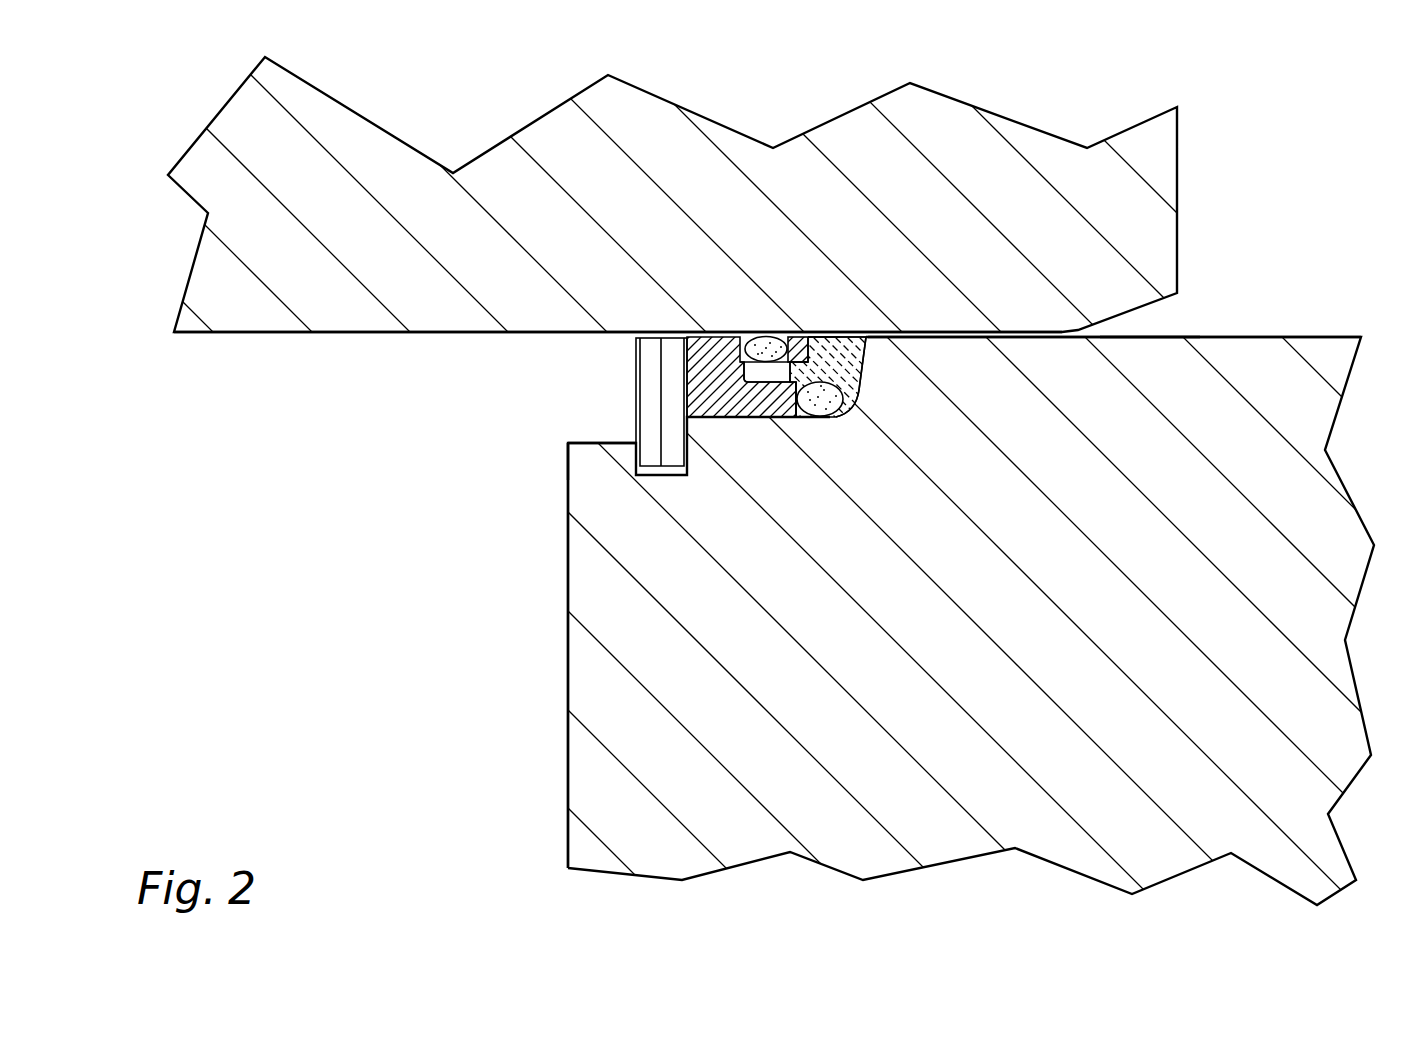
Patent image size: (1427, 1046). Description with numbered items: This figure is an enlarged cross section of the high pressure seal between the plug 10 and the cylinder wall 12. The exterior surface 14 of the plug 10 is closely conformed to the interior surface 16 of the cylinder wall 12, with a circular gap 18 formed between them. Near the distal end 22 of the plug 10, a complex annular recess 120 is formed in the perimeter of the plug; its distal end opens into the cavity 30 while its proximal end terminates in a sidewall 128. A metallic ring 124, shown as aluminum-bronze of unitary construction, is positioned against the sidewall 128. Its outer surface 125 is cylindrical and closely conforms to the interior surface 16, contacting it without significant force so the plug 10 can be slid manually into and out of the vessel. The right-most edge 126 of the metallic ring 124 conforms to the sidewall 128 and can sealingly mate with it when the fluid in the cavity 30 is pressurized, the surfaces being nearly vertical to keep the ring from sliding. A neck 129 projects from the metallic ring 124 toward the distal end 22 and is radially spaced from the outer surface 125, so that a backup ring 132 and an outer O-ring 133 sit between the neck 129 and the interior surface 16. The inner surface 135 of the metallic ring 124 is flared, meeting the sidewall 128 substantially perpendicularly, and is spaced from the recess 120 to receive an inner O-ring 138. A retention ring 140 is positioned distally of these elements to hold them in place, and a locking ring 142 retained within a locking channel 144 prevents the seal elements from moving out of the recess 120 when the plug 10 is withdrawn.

The plug 10 is at (1334, 441).
The cylinder wall 12 is at (1178, 173).
The exterior surface 14 is at (1240, 333).
The interior surface 16 is at (356, 337).
The circular gap 18 is at (1182, 322).
The distal end 22 is at (584, 664).
The cavity 30 is at (378, 557).
The complex annular recess 120 is at (592, 438).
The metallic ring 124 is at (825, 336).
The outer surface 125 is at (816, 326).
The right-most edge 126 is at (868, 381).
The sidewall 128 is at (853, 343).
The neck 129 is at (752, 375).
The backup ring 132 is at (800, 336).
The outer O-ring 133 is at (787, 336).
The inner surface 135 is at (794, 396).
The inner O-ring 138 is at (834, 417).
The retention ring 140 is at (712, 336).
The locking ring 142 is at (653, 476).
The locking channel 144 is at (673, 463).